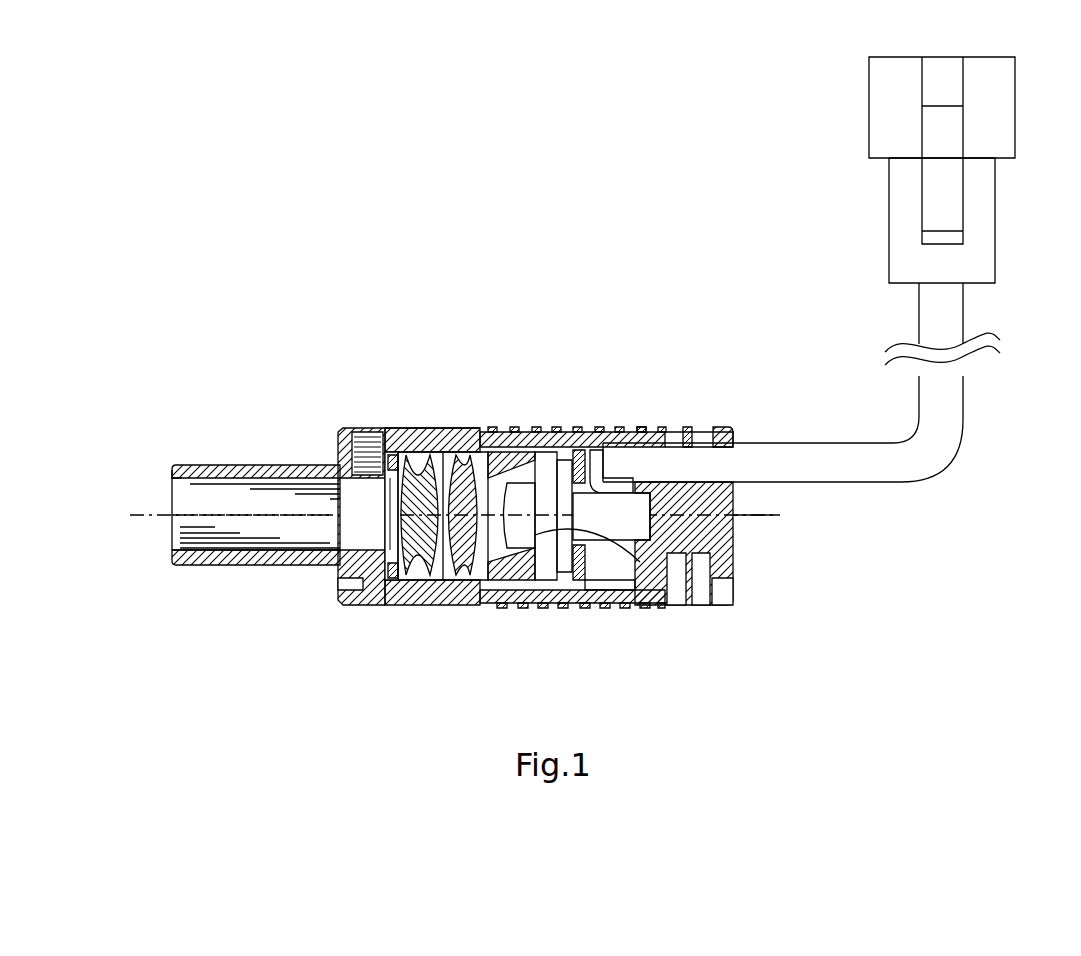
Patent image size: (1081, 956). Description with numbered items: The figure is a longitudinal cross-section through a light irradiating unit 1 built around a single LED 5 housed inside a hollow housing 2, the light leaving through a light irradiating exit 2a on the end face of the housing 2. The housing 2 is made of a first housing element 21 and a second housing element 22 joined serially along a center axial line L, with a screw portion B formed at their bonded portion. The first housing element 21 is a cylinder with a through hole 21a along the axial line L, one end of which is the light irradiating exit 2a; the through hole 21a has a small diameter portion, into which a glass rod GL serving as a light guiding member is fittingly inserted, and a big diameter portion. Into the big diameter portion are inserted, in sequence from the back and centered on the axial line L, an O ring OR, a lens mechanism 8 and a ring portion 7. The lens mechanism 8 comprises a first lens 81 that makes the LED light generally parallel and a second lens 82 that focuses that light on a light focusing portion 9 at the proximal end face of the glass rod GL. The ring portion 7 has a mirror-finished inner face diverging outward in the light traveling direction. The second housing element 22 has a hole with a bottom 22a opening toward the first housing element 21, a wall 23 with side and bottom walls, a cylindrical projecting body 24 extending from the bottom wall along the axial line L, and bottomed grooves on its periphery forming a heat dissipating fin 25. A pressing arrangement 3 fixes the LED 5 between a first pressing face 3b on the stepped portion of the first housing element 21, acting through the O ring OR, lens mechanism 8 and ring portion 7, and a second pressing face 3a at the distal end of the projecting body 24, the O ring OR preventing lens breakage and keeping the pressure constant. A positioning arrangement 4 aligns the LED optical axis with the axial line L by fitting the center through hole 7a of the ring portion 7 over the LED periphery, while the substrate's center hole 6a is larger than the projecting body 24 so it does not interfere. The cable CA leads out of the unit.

The light irradiating unit 1 is at (535, 218).
The housing 2 is at (455, 331).
The light irradiating exit 2a is at (172, 481).
The first housing element 21 is at (426, 424).
The through hole 21a is at (172, 542).
The second housing element 22 is at (516, 423).
The bottom 22a is at (620, 606).
The wall 23 is at (735, 556).
The cylindrical projecting body 24 is at (657, 508).
The heat dissipating fin 25 is at (646, 428).
The pressing arrangement 3 is at (578, 612).
The second pressing face 3a is at (591, 447).
The first pressing face 3b is at (405, 429).
The positioning arrangement 4 is at (517, 602).
The LED 5 is at (548, 606).
The center hole 6a is at (604, 480).
The ring portion 7 is at (494, 433).
The center through hole 7a is at (660, 596).
The lens mechanism 8 is at (472, 686).
The first lens 81 is at (456, 606).
The second lens 82 is at (422, 606).
The light focusing portion 9 is at (377, 605).
The screw portion B is at (487, 602).
The O ring OR is at (388, 430).
The glass rod GL is at (172, 512).
The center axial line L is at (765, 517).
The cable CA is at (965, 430).